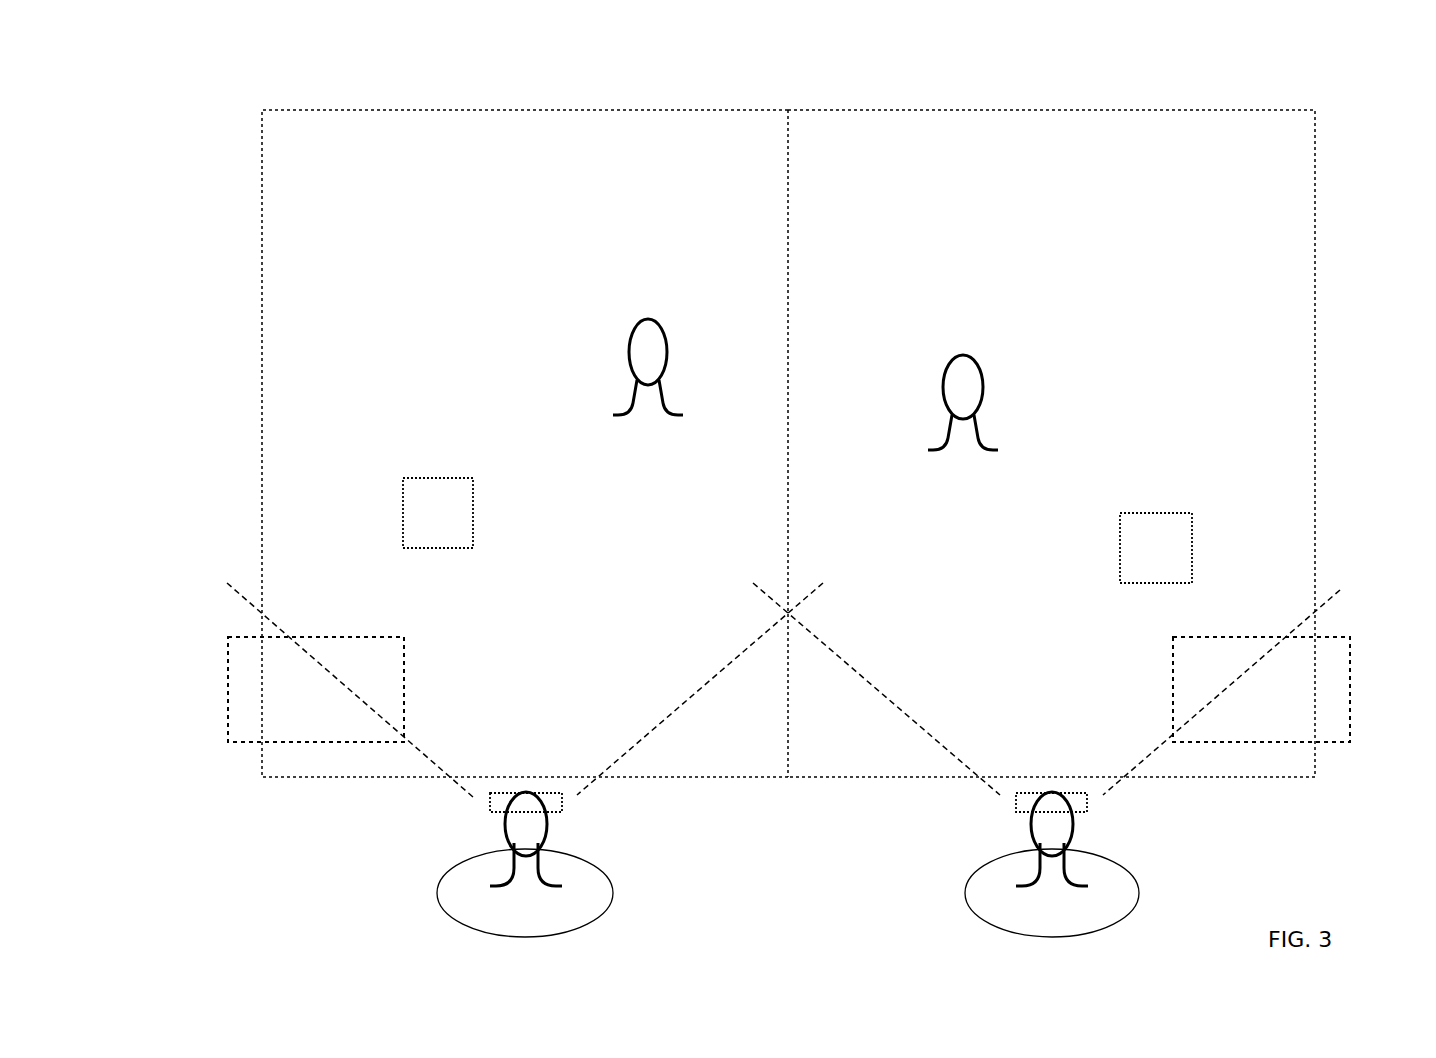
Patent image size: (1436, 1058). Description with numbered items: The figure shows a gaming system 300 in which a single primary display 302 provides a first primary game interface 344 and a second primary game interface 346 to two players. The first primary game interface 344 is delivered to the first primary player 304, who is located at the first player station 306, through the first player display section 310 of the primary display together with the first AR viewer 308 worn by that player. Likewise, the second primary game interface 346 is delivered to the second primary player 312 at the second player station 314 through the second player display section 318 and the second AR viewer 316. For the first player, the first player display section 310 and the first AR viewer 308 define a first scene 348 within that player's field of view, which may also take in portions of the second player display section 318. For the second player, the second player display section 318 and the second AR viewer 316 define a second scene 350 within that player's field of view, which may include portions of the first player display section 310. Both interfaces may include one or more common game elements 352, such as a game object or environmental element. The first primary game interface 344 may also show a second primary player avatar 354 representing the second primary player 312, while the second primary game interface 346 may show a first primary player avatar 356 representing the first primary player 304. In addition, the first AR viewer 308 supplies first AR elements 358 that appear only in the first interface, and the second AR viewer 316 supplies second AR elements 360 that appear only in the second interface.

The gaming system 300 is at (280, 70).
The primary display 302 is at (792, 102).
The first primary player 304 is at (508, 840).
The first player station 306 is at (467, 908).
The first AR viewer 308 is at (483, 805).
The first player display section 310 is at (262, 397).
The second primary player 312 is at (1035, 840).
The second player station 314 is at (993, 908).
The second AR viewer 316 is at (1013, 813).
The second player display section 318 is at (1318, 425).
The first primary game interface 344 is at (228, 620).
The second primary game interface 346 is at (1338, 627).
The first scene 348 is at (645, 748).
The second scene 350 is at (1167, 748).
The common game elements 352 is at (423, 472).
The second primary player avatar 354 is at (622, 345).
The first primary player avatar 356 is at (992, 375).
The first AR elements 358 is at (218, 715).
The second AR elements 360 is at (1353, 732).